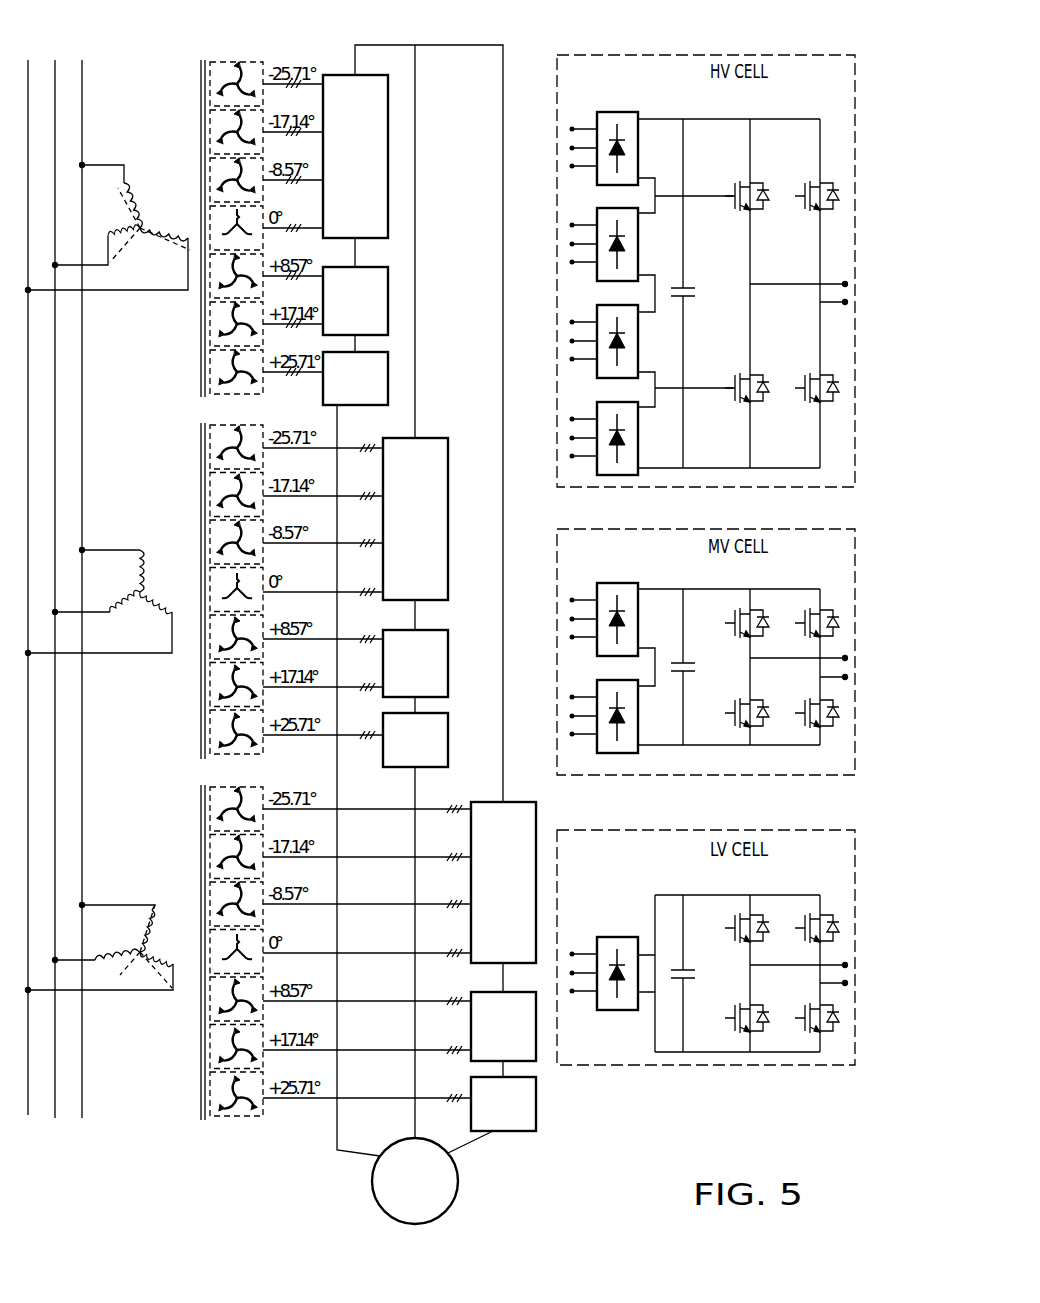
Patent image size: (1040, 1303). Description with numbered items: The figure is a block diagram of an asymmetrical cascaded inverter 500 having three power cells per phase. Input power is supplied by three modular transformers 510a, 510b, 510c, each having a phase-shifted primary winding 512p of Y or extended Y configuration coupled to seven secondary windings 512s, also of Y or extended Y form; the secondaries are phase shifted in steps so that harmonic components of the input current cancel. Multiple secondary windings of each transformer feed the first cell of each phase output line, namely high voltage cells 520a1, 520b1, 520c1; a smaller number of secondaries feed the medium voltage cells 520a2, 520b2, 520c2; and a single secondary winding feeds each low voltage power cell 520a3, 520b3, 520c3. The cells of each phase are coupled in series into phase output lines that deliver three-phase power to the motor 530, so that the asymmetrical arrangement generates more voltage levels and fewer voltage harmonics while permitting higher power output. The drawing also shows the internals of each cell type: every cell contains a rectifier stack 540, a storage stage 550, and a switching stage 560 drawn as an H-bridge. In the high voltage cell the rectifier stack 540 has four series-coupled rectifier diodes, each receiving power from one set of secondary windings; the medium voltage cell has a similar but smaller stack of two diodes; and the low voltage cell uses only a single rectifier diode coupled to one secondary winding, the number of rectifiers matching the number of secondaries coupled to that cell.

The asymmetrical cascaded inverter 500 is at (135, 25).
The modular transformer 510a is at (111, 190).
The modular transformer 510b is at (160, 515).
The modular transformer 510c is at (160, 883).
The phase-shifted primary winding 512p is at (124, 165).
The secondary windings 512s is at (232, 62).
The high voltage cell 520a1 is at (388, 167).
The medium voltage cell 520a2 is at (388, 303).
The low voltage power cell 520a3 is at (388, 366).
The high voltage cell 520b1 is at (445, 438).
The medium voltage cell 520b2 is at (468, 628).
The low voltage power cell 520b3 is at (395, 767).
The high voltage cell 520c1 is at (536, 815).
The medium voltage cell 520c2 is at (536, 1061).
The low voltage power cell 520c3 is at (536, 1120).
The motor 530 is at (457, 1192).
The rectifier stack 540 is at (618, 90).
The storage stage 550 is at (683, 90).
The switching stage 560 is at (840, 112).